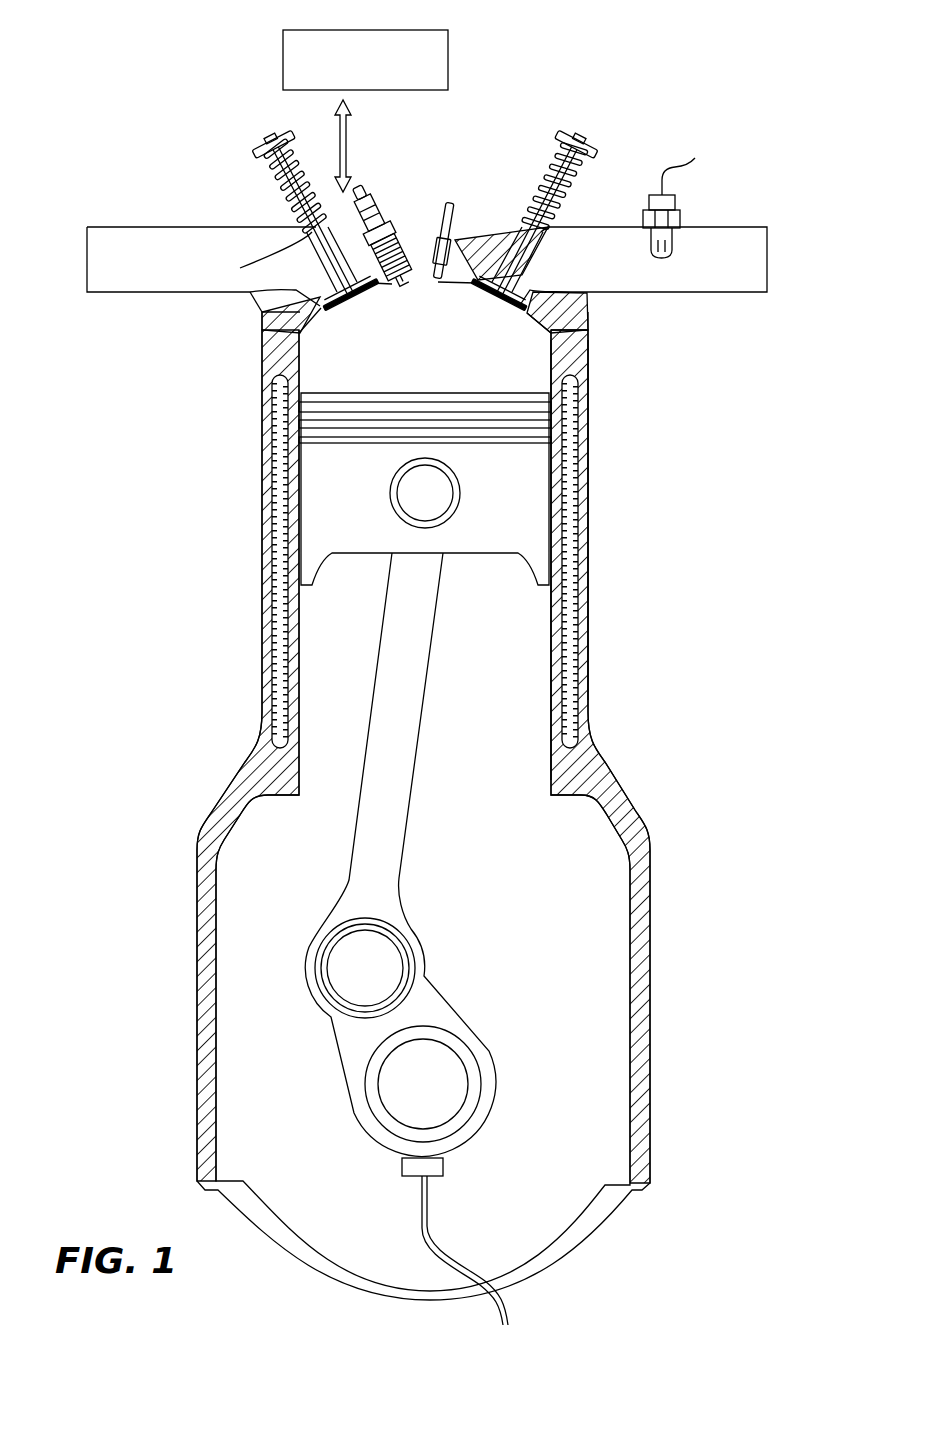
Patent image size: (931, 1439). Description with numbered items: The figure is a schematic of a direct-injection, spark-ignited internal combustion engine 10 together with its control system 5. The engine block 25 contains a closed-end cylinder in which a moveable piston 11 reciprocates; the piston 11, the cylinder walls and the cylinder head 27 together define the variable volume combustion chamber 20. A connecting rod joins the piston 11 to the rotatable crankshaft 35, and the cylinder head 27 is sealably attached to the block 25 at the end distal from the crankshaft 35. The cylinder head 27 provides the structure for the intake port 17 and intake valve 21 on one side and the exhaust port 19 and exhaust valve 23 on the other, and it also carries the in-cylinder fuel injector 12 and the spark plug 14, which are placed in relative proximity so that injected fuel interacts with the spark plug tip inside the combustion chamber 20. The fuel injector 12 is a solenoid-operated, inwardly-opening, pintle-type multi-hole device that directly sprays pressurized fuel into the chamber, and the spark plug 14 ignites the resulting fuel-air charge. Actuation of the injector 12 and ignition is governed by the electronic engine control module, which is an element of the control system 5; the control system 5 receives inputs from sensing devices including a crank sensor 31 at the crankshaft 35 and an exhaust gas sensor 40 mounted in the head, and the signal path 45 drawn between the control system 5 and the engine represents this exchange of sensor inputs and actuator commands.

The control system 5 is at (448, 42).
The internal combustion engine 10 is at (168, 443).
The piston 11 is at (520, 500).
The fuel injector 12 is at (441, 217).
The spark plug 14 is at (375, 210).
The intake port 17 is at (320, 278).
The exhaust port 19 is at (538, 278).
The combustion chamber 20 is at (450, 356).
The intake valve 21 is at (316, 252).
The exhaust valve 23 is at (522, 265).
The engine block 25 is at (582, 448).
The cylinder head 27 is at (572, 327).
The crank sensor 31 is at (404, 1166).
The crankshaft 35 is at (365, 1083).
The exhaust gas sensor 40 is at (678, 218).
The signal line 45 is at (338, 142).